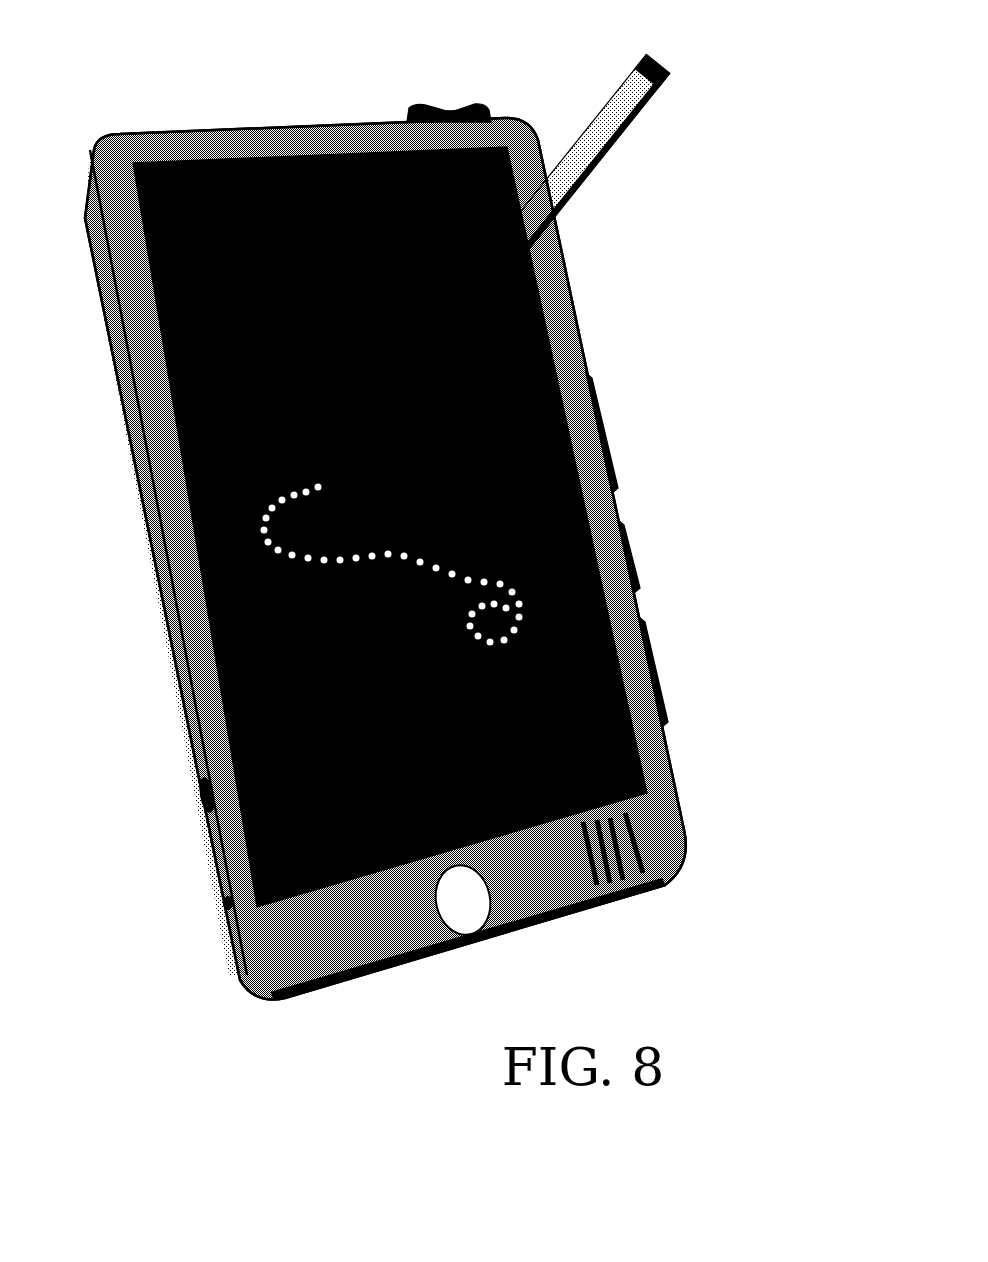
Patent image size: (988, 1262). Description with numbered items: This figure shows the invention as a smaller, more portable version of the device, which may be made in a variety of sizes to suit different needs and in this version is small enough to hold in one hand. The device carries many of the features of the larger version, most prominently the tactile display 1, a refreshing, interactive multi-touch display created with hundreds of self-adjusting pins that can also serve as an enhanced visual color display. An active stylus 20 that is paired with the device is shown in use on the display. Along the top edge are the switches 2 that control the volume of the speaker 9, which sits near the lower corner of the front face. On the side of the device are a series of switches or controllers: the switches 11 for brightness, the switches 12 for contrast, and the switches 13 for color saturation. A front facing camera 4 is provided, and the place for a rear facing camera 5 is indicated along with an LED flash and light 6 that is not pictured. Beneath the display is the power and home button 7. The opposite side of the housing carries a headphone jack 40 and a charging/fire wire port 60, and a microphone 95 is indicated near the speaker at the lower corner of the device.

The tactile display 1 is at (548, 325).
The volume switches 2 is at (464, 100).
The front facing camera 4 is at (306, 144).
The rear facing camera location 5 is at (170, 108).
The LED flash and light 6 is at (140, 108).
The power and home button 7 is at (488, 912).
The speaker 9 is at (662, 868).
The brightness switches 11 is at (663, 669).
The contrast switches 12 is at (630, 545).
The color saturation switches 13 is at (605, 437).
The active stylus 20 is at (676, 63).
The headphone jack 40 is at (218, 905).
The charging/fire wire port 60 is at (197, 813).
The microphone 95 is at (657, 832).